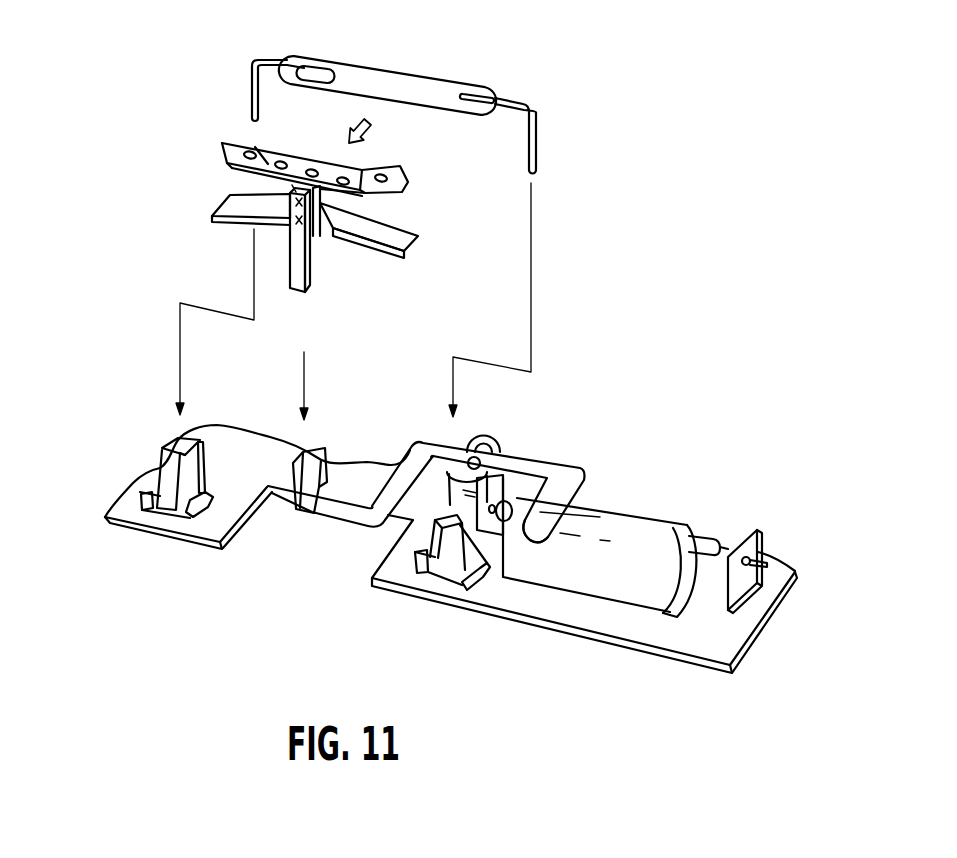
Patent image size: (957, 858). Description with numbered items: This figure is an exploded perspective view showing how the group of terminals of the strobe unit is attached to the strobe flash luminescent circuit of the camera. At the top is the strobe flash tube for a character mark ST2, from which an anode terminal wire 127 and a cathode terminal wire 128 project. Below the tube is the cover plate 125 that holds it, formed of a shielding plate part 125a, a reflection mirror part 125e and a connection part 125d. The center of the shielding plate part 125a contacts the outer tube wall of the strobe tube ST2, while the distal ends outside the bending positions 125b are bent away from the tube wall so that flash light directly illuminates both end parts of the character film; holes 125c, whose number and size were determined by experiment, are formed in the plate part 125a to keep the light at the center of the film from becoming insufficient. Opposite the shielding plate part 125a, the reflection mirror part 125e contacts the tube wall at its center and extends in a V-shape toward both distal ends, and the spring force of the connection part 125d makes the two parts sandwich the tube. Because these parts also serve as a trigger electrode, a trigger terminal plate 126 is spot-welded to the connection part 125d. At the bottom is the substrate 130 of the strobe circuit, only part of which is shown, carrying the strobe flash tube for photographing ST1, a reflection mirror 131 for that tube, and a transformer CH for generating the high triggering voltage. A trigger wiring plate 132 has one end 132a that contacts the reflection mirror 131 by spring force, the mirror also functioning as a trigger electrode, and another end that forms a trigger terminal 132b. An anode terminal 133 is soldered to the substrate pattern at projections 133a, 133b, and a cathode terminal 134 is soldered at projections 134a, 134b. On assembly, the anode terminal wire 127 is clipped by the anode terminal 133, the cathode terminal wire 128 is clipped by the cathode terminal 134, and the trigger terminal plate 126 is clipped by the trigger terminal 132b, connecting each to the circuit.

The cover plate 125 is at (280, 201).
The shielding plate part 125a is at (333, 174).
The bending positions 125b is at (372, 190).
The holes 125c is at (277, 155).
The connection part 125d is at (337, 234).
The reflection mirror part 125e is at (366, 227).
The trigger terminal plate 126 is at (297, 240).
The anode terminal wire 127 is at (536, 150).
The cathode terminal wire 128 is at (251, 83).
The strobe flash tube for a character mark ST2 is at (381, 45).
The strobe flash tube for photographing ST1 is at (702, 540).
The substrate 130 is at (624, 618).
The reflection mirror 131 is at (613, 535).
The trigger wiring plate 132 is at (464, 477).
The one end of the wiring plate 132a is at (537, 527).
The trigger terminal 132b is at (290, 510).
The anode terminal 133 is at (437, 605).
The projection 133a is at (473, 573).
The projection 133b is at (447, 556).
The cathode terminal 134 is at (133, 532).
The projection 134a is at (187, 500).
The projection 134b is at (168, 496).
The transformer CH is at (495, 436).